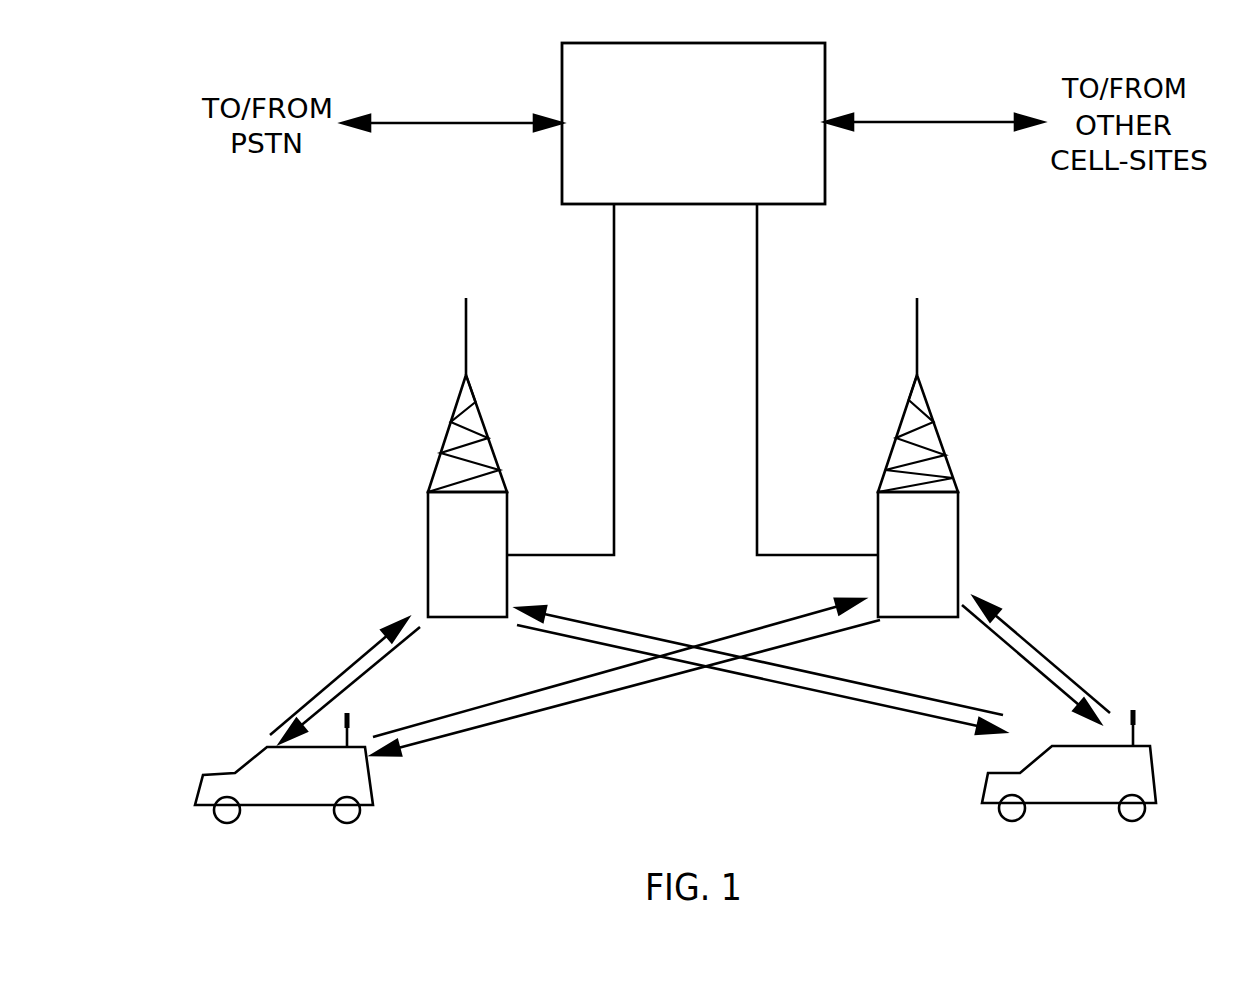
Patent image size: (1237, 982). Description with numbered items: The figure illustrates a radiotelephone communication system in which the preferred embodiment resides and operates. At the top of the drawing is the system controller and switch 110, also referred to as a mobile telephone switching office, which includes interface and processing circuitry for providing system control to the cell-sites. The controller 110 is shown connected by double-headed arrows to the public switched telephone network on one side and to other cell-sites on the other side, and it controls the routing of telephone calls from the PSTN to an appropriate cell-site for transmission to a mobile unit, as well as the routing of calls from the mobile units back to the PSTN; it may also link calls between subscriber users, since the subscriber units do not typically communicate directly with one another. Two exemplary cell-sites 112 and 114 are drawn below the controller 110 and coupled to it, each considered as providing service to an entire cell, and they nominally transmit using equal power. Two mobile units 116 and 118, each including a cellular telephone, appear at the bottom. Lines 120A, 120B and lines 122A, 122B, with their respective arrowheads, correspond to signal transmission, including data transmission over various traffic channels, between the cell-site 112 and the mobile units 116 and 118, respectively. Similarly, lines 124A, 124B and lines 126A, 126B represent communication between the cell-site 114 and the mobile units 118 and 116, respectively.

The system controller and switch 110 is at (748, 42).
The cell-site 112 is at (450, 417).
The cell-site 114 is at (938, 423).
The mobile unit 116 is at (318, 807).
The mobile unit 118 is at (1107, 807).
The line 120A is at (370, 670).
The line 120B is at (362, 655).
The line 122A is at (863, 705).
The line 122B is at (580, 620).
The line 124A is at (1007, 645).
The line 124B is at (1025, 637).
The line 126A is at (558, 705).
The line 126B is at (782, 620).